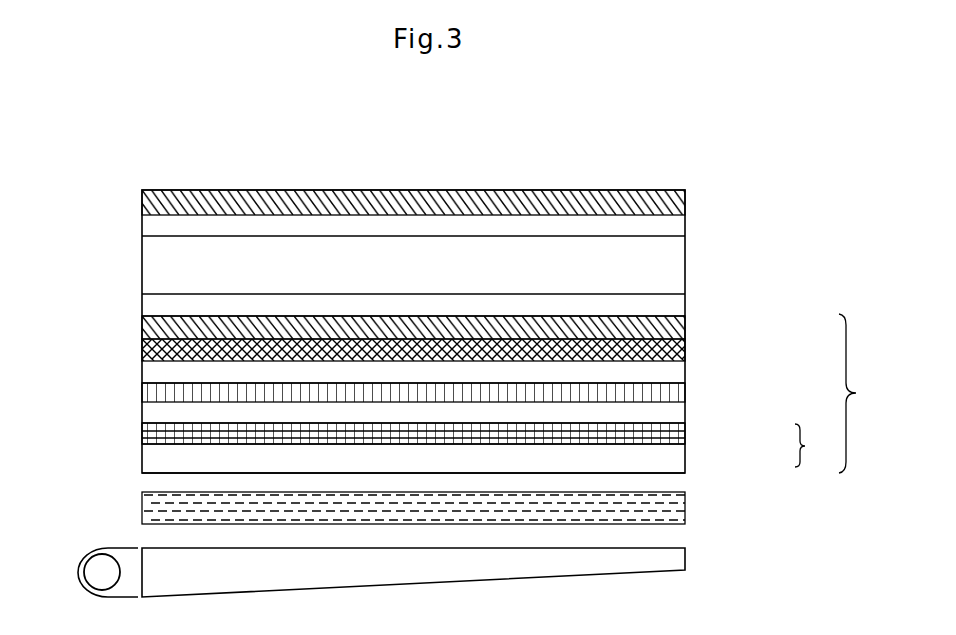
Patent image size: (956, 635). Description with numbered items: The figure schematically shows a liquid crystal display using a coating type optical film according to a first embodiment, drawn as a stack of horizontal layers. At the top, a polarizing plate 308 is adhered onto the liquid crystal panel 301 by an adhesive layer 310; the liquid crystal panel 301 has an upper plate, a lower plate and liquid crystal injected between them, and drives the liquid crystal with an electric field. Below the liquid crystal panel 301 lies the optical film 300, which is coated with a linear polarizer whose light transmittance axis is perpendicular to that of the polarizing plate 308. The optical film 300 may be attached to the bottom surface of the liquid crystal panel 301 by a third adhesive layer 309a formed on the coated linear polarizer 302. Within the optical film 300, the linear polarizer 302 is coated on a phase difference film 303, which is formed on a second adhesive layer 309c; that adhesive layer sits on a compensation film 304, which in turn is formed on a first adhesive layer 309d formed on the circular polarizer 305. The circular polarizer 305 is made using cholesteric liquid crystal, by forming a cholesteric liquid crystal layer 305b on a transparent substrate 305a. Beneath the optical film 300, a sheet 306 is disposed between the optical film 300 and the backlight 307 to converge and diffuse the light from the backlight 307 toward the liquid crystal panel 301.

The optical film 300 is at (868, 393).
The liquid crystal panel 301 is at (678, 267).
The linear polarizer 302 is at (685, 326).
The phase difference film 303 is at (685, 350).
The compensation film 304 is at (680, 390).
The circular polarizer 305 is at (820, 445).
The transparent substrate 305a is at (678, 460).
The cholesteric liquid crystal layer 305b is at (685, 428).
The sheet 306 is at (680, 503).
The backlight 307 is at (678, 558).
The polarizing plate 308 is at (685, 200).
The third adhesive layer 309a is at (147, 304).
The second adhesive layer 309c is at (147, 374).
The first adhesive layer 309d is at (147, 411).
The adhesive layer 310 is at (678, 229).